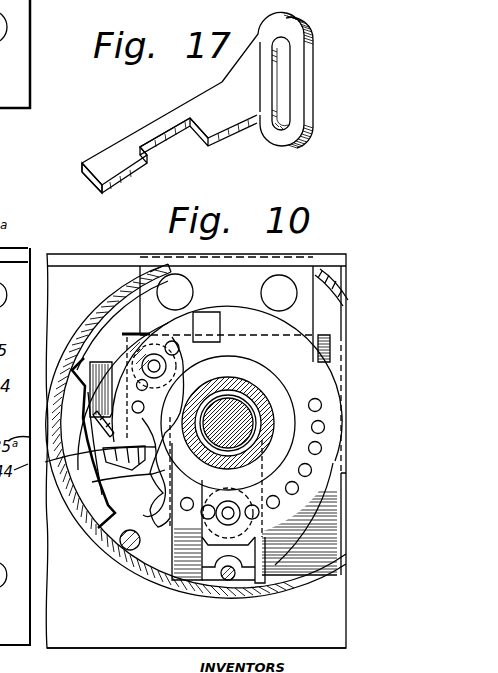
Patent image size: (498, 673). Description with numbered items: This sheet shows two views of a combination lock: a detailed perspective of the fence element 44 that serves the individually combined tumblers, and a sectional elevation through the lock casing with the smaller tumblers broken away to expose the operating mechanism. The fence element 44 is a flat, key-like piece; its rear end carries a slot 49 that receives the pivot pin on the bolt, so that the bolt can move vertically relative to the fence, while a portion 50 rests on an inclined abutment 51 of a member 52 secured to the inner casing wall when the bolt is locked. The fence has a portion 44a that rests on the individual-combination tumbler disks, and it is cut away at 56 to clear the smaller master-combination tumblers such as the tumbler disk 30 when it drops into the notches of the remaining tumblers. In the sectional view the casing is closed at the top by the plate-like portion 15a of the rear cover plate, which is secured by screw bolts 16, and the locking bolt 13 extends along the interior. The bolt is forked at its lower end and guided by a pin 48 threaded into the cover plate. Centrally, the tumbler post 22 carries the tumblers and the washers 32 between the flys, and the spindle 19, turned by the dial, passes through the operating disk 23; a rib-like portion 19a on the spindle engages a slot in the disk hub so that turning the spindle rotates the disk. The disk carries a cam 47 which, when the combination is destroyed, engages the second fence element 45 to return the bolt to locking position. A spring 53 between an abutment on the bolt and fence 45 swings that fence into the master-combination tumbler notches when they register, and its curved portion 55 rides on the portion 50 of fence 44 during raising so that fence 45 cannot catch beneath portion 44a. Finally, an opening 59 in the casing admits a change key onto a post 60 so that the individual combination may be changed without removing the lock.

In FIG. 10, the locking bolt 13 is at (200, 285).
In FIG. 10, the plate-like portion 15a is at (108, 256).
In FIG. 10, the screw bolts 16 is at (122, 560).
In FIG. 10, the spindle 19 is at (228, 408).
In FIG. 10, the rib-like portion 19a is at (248, 418).
In FIG. 10, the tumbler post 22 is at (264, 471).
In FIG. 10, the operating disk 23 is at (155, 513).
In FIG. 10, the tumbler disk 30 is at (308, 348).
In FIG. 10, the washers 32 is at (245, 363).
In FIG. 17, the fence element 44 is at (346, 118).
In FIG. 17, the portion of fence element 44a is at (143, 165).
In FIG. 10, the portion of fence element 44a is at (98, 501).
In FIG. 10, the fence element 45 is at (112, 388).
In FIG. 10, the cam 47 is at (147, 492).
In FIG. 10, the pin 48 is at (256, 540).
In FIG. 17, the slot 49 is at (349, 80).
In FIG. 10, the slot 49 is at (176, 357).
In FIG. 17, the portion of fence 50 is at (216, 88).
In FIG. 10, the inclined abutment 51 is at (77, 368).
In FIG. 10, the member 52 is at (120, 544).
In FIG. 10, the spring 53 is at (127, 334).
In FIG. 10, the curved portion 55 is at (127, 352).
In FIG. 17, the cut-away 56 is at (183, 133).
In FIG. 10, the opening 59 is at (214, 577).
In FIG. 10, the post 60 is at (231, 581).